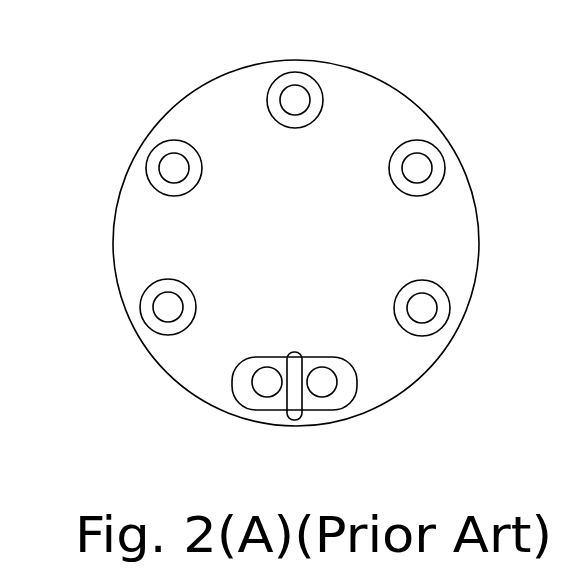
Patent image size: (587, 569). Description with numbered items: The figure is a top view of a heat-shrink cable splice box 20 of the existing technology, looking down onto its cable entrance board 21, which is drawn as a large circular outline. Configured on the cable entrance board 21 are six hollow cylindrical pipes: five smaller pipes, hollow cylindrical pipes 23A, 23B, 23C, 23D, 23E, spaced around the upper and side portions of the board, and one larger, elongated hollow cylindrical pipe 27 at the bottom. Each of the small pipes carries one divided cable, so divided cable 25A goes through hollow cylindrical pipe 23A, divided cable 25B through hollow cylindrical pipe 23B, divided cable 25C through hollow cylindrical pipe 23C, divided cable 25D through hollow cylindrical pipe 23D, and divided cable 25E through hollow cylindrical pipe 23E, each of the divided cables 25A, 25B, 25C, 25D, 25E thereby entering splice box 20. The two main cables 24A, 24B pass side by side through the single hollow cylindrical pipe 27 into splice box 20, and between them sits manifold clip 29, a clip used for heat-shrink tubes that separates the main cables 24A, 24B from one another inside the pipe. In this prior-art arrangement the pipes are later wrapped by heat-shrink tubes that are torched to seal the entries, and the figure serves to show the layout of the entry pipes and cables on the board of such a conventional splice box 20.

The heat-shrink cable splice box 20 is at (50, 48).
The cable entrance board 21 is at (467, 232).
The hollow cylindrical pipe 23A is at (148, 326).
The hollow cylindrical pipe 23B is at (153, 190).
The hollow cylindrical pipe 23C is at (314, 81).
The hollow cylindrical pipe 23D is at (413, 140).
The hollow cylindrical pipe 23E is at (446, 290).
The divided cable 25A is at (155, 298).
The divided cable 25B is at (171, 152).
The divided cable 25C is at (281, 96).
The divided cable 25D is at (428, 180).
The divided cable 25E is at (425, 322).
The main cable 24A is at (252, 383).
The main cable 24B is at (338, 381).
The hollow cylindrical pipe 27 is at (320, 409).
The manifold clip 29 is at (288, 418).